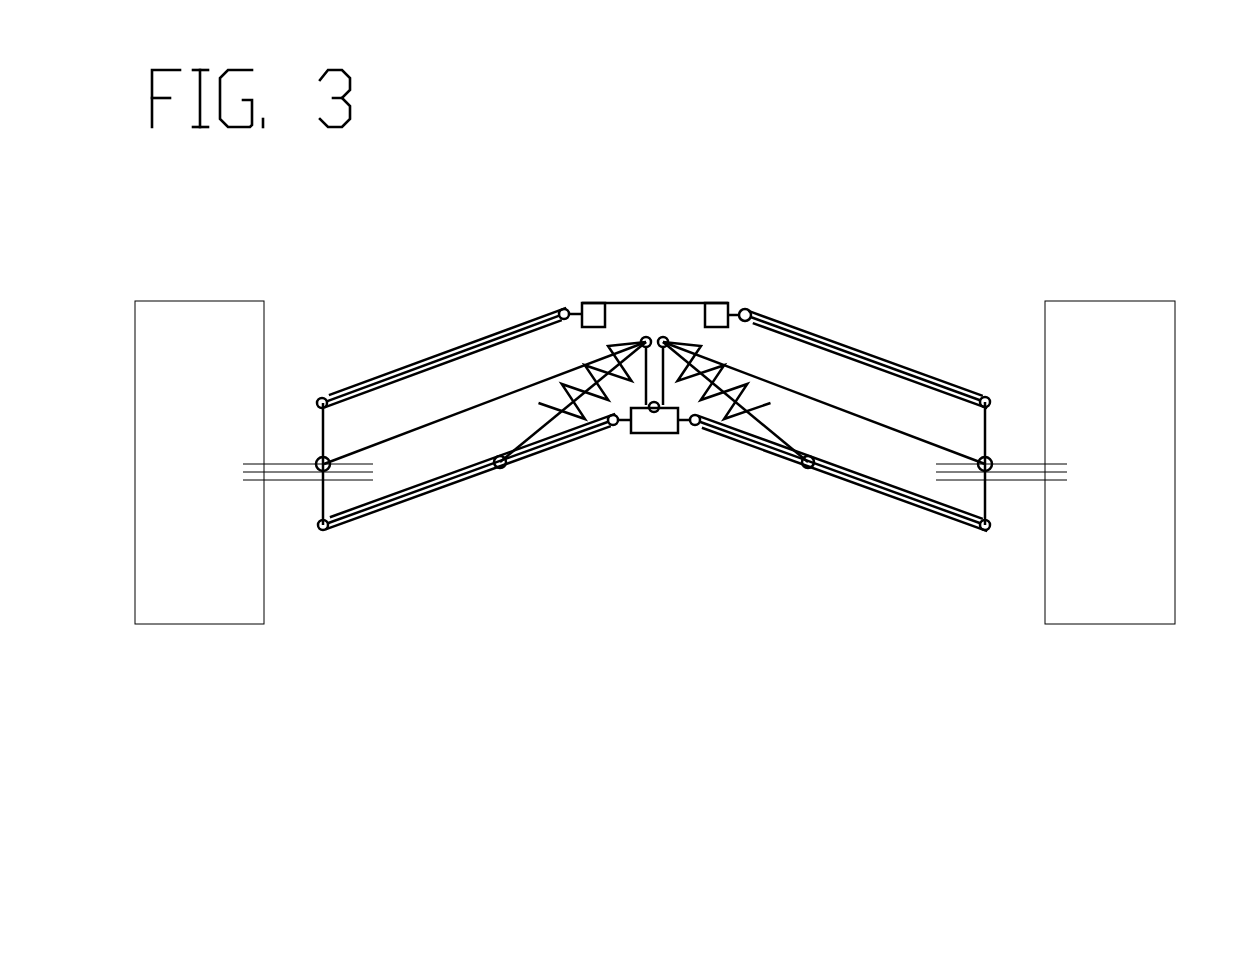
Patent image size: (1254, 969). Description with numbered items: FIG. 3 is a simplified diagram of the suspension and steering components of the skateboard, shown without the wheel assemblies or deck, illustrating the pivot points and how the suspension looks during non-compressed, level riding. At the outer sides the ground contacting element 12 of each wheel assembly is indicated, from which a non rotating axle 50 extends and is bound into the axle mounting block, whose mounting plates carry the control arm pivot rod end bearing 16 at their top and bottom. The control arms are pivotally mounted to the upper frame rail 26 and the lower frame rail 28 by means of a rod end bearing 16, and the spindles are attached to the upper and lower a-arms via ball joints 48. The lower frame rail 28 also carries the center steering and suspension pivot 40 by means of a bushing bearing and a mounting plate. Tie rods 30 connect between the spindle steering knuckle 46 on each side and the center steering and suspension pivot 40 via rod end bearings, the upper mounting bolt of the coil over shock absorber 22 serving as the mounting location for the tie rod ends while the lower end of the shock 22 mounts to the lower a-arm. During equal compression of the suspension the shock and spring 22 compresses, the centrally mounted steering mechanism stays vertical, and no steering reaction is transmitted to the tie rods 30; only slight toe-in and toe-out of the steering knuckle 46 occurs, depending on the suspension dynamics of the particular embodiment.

The ground contacting element 12 is at (1137, 327).
The rod end bearing 16 is at (958, 388).
The coil over shock absorber 22 is at (550, 430).
The upper frame rail 26 is at (715, 313).
The lower frame rail 28 is at (653, 425).
The tie rod 30 is at (822, 403).
The center steering and suspension pivot 40 is at (658, 334).
The spindle steering knuckle 46 is at (330, 458).
The ball joints 48 is at (327, 505).
The non rotating axle 50 is at (285, 465).